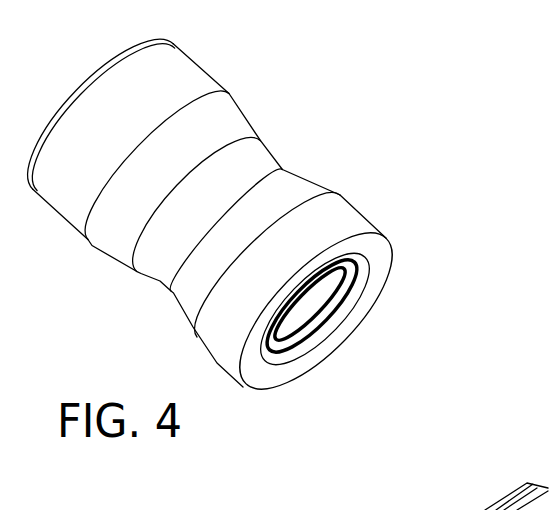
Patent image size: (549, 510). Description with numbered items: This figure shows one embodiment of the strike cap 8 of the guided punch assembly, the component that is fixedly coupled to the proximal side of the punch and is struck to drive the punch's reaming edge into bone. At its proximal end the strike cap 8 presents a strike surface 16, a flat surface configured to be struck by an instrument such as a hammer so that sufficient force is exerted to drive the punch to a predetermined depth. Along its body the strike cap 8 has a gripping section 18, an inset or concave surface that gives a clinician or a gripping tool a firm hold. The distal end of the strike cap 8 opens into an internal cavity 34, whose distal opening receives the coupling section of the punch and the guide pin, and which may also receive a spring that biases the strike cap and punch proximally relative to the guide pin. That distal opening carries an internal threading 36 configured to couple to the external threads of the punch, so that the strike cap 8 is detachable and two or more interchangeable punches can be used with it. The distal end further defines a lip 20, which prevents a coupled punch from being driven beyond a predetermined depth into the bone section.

The strike cap 8 is at (204, 70).
The strike surface 16 is at (63, 99).
The gripping section 18 is at (305, 132).
The lip 20 is at (382, 258).
The internal cavity 34 is at (303, 359).
The internal threading 36 is at (348, 296).